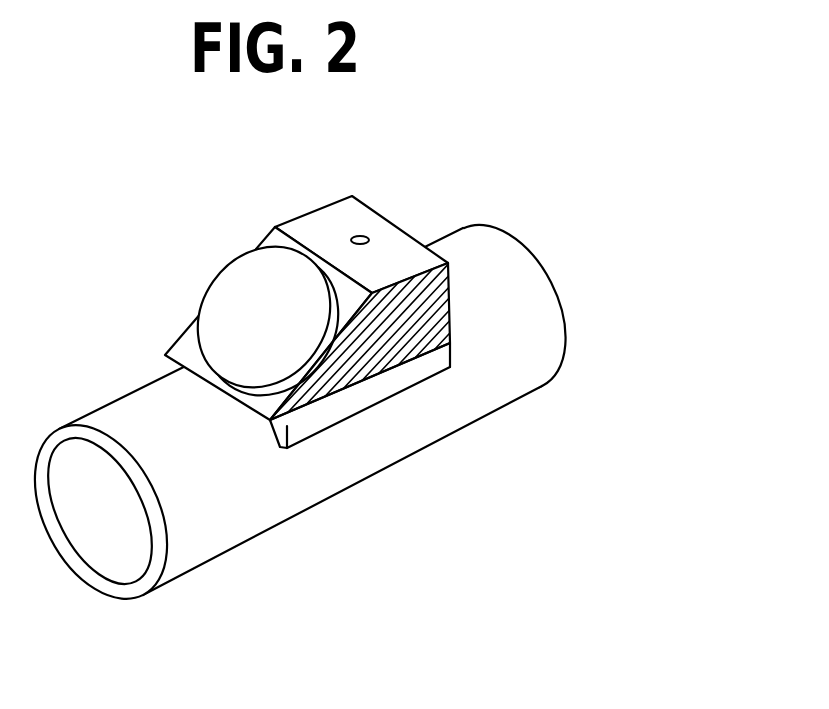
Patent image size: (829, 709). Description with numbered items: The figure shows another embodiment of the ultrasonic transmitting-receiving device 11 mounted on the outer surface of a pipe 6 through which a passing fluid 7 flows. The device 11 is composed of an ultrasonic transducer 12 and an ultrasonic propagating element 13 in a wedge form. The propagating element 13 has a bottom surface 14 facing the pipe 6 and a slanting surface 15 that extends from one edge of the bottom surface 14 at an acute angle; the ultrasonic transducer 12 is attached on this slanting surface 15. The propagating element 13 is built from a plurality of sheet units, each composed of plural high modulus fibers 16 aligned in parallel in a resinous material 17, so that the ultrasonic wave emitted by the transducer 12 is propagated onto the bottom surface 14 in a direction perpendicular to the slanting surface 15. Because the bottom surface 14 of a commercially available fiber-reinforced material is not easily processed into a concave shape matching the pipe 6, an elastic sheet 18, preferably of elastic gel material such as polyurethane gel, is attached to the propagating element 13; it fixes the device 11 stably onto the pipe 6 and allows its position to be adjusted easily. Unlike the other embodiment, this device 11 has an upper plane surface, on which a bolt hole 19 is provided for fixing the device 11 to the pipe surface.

The pipe 6 is at (265, 518).
The passing fluid 7 is at (113, 567).
The ultrasonic transmitting-receiving device 11 is at (363, 349).
The ultrasonic transducer 12 is at (237, 282).
The ultrasonic propagating element 13 is at (400, 243).
The bottom surface 14 is at (433, 353).
The slanting surface 15 is at (188, 342).
The high modulus fibers 16 is at (358, 378).
The resinous material 17 is at (332, 390).
The elastic sheet 18 is at (410, 375).
The bolt hole 19 is at (360, 235).